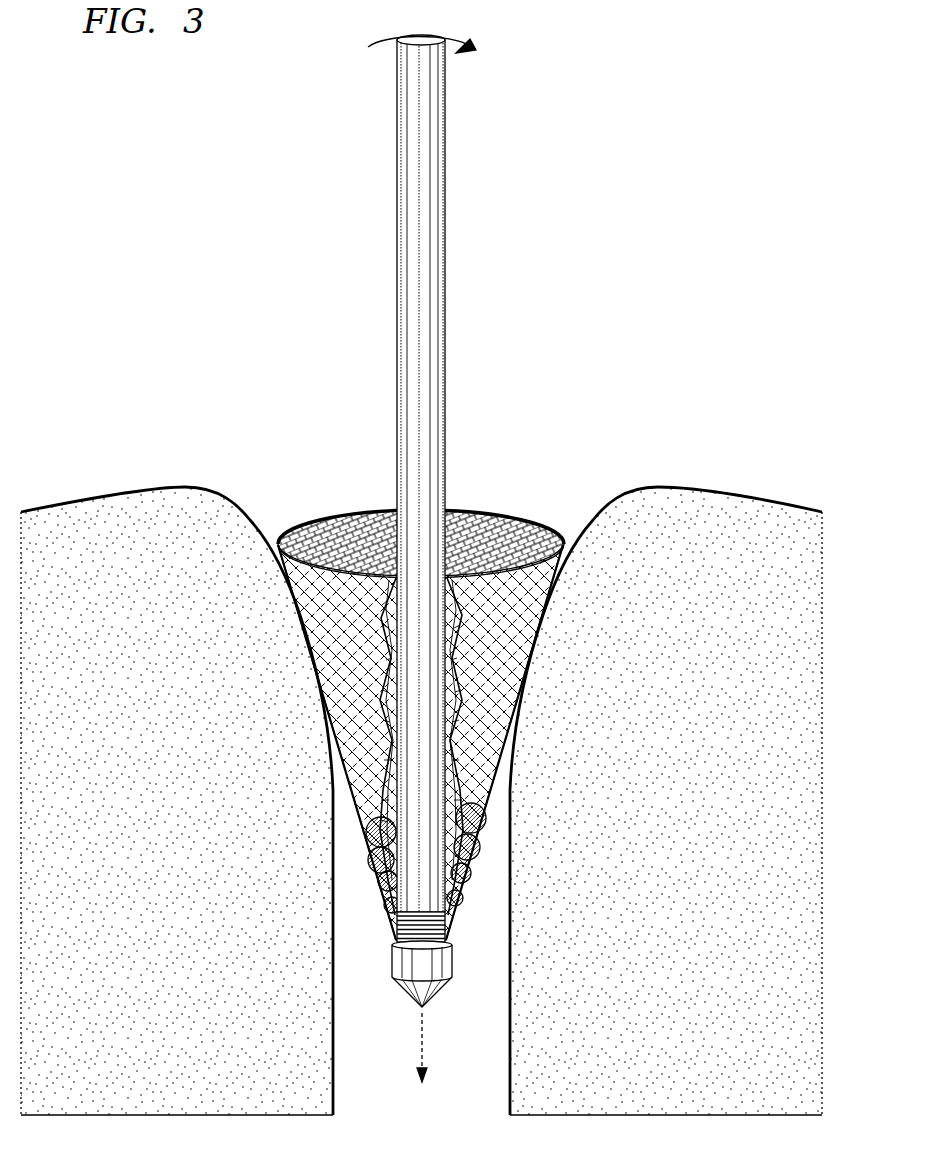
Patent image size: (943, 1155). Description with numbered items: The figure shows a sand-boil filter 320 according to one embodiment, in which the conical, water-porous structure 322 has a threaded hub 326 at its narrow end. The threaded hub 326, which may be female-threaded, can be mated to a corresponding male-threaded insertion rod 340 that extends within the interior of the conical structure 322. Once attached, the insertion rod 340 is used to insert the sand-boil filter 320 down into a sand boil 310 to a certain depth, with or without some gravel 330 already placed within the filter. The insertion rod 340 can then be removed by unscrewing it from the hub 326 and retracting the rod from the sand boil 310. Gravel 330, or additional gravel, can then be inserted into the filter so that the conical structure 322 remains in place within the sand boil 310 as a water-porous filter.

The sand boil 310 is at (258, 497).
The sand-boil filter 320 is at (497, 510).
The conical, water-porous structure 322 is at (559, 570).
The threaded hub 326 is at (447, 961).
The gravel 330 is at (478, 858).
The threaded insertion rod 340 is at (447, 321).